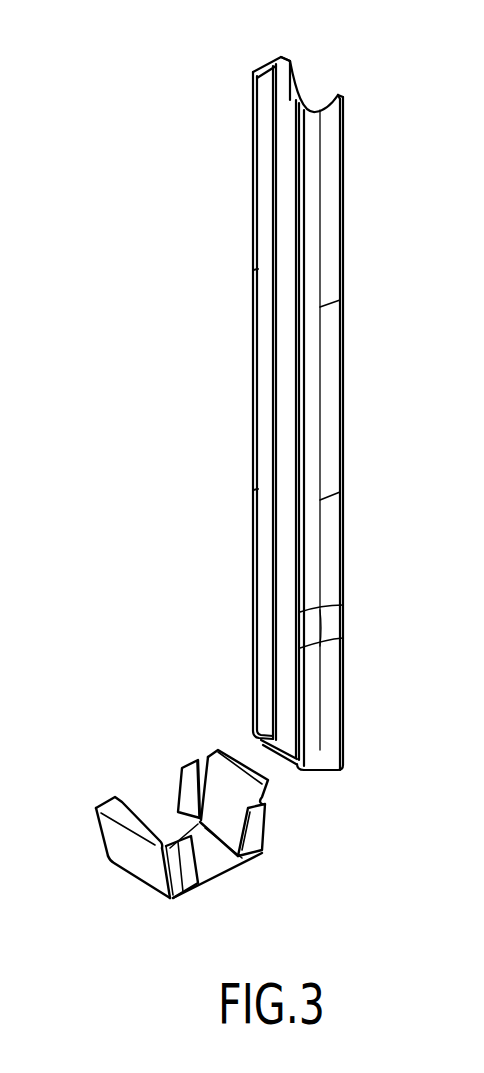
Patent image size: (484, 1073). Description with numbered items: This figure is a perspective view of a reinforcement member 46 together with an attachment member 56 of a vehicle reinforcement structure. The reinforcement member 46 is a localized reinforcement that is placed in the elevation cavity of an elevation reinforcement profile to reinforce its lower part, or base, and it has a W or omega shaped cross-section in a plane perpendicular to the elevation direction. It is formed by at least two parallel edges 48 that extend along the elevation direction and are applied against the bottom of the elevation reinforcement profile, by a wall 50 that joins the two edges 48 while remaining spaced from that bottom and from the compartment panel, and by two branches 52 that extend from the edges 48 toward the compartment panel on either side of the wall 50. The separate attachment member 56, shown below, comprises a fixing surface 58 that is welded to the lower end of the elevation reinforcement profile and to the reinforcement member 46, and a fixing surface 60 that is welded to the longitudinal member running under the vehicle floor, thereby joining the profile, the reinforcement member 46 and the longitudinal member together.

The reinforcement member 46 is at (287, 390).
The parallel edges 48 is at (252, 232).
The wall 50 is at (285, 115).
The branches 52 is at (268, 70).
The attachment member 56 is at (122, 842).
The fixing surface 58 is at (231, 768).
The fixing surface 60 is at (212, 867).